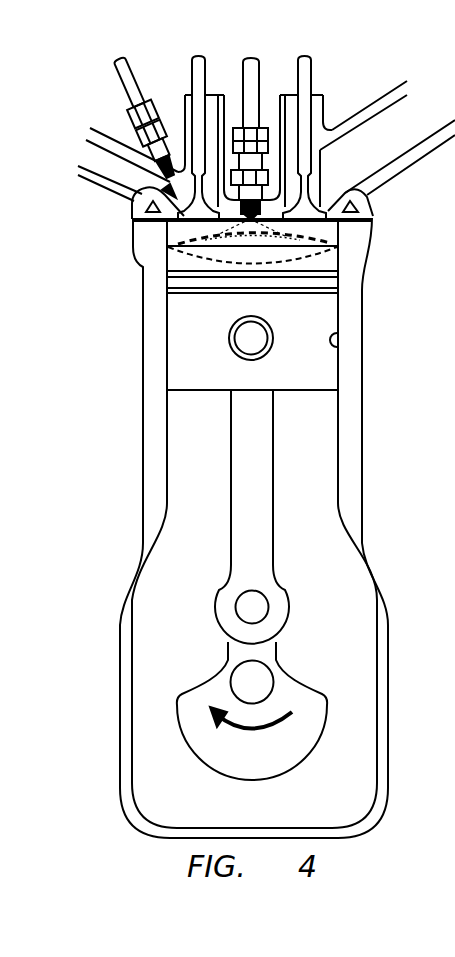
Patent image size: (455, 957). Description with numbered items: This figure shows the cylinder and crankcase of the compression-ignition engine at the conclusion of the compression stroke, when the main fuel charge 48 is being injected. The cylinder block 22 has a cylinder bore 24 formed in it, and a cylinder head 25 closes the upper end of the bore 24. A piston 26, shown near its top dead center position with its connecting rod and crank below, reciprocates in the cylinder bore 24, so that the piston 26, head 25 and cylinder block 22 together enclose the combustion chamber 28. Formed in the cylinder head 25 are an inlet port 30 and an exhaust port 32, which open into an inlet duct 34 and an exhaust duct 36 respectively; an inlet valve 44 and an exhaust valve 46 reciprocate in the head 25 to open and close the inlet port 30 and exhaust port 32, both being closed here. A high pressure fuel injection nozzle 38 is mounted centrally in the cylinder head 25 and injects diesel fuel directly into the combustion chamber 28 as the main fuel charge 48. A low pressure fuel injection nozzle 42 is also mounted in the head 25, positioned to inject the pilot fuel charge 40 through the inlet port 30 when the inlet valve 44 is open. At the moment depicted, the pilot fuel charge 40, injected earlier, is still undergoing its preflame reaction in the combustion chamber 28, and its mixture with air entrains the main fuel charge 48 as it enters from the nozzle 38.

The cylinder block 22 is at (363, 312).
The cylinder bore 24 is at (338, 352).
The cylinder head 25 is at (375, 206).
The piston 26 is at (317, 328).
The combustion chamber 28 is at (330, 232).
The inlet port 30 is at (131, 200).
The exhaust port 32 is at (331, 190).
The inlet duct 34 is at (107, 163).
The exhaust duct 36 is at (427, 137).
The high pressure fuel injection nozzle 38 is at (271, 150).
The pilot fuel charge 40 is at (232, 240).
The low pressure fuel injection nozzle 42 is at (137, 125).
The inlet valve 44 is at (197, 73).
The exhaust valve 46 is at (311, 73).
The main fuel charge 48 is at (193, 228).